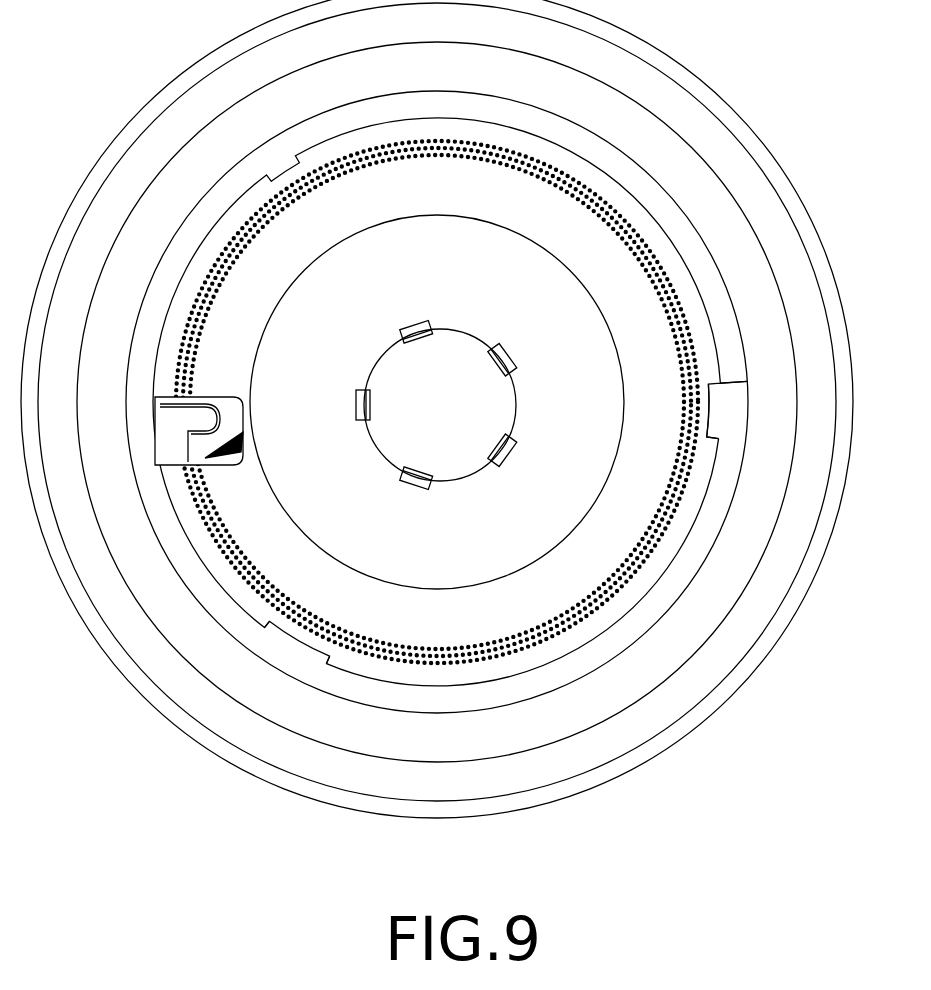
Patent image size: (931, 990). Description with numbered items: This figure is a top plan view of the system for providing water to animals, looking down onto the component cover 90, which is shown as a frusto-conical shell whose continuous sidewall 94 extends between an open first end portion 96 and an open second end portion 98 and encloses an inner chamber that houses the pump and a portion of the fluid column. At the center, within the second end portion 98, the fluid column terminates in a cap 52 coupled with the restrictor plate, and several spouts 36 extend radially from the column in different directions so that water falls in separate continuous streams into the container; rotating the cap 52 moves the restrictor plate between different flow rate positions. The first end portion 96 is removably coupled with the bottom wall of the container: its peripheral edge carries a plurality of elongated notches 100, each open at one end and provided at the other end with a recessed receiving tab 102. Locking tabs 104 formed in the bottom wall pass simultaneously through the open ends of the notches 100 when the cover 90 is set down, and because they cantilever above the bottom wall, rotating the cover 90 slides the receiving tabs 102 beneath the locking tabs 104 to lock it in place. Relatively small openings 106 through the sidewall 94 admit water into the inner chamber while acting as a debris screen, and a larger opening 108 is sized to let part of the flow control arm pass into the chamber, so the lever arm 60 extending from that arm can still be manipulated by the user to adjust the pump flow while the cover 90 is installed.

The spouts 36 is at (410, 320).
The cap 52 is at (445, 345).
The lever arm 60 is at (177, 422).
The component cover 90 is at (495, 272).
The continuous sidewall 94 is at (562, 306).
The first end portion 96 is at (703, 258).
The second end portion 98 is at (345, 350).
The elongated notches 100 is at (296, 665).
The recessed receiving tab 102 is at (720, 420).
The locking tabs 104 is at (724, 383).
The openings 106 is at (370, 660).
The opening 108 is at (180, 463).